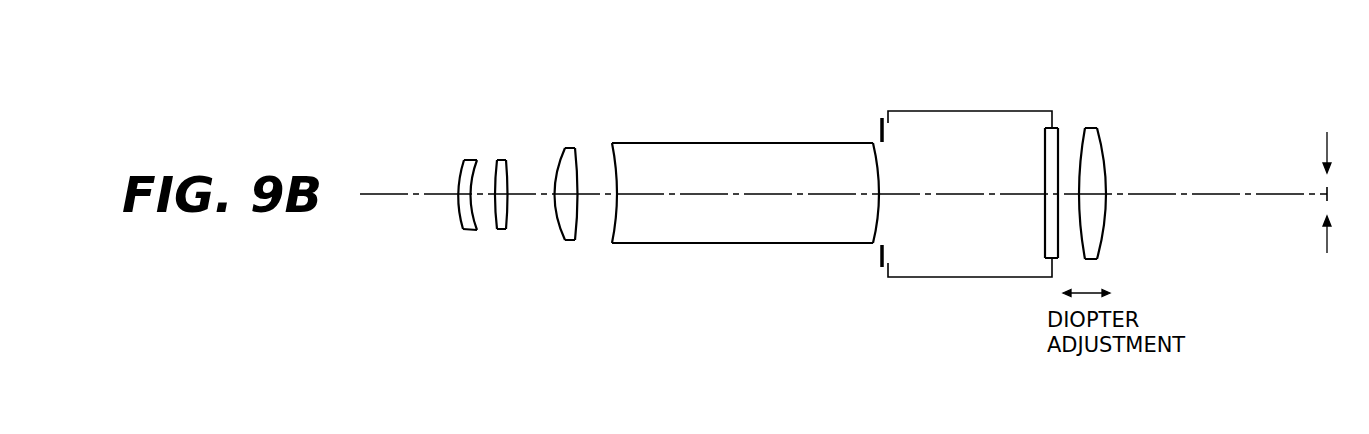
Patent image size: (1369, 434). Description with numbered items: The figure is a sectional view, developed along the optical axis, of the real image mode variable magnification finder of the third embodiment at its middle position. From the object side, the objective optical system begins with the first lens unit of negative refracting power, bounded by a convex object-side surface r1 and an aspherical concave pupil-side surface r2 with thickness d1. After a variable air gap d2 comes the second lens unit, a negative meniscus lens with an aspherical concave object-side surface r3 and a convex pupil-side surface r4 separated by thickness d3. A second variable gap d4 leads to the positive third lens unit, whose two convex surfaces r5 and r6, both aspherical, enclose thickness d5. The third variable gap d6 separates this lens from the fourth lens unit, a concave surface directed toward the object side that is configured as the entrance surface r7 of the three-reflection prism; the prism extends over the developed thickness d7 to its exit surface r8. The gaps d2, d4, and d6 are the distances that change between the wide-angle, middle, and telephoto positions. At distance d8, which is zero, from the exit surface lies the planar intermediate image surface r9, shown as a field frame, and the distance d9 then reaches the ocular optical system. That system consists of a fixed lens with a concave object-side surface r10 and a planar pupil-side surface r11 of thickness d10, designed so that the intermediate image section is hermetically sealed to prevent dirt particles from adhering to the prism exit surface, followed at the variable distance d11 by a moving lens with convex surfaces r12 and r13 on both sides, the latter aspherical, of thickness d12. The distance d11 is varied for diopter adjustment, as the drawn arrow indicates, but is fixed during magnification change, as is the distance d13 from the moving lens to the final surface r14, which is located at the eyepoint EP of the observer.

The object-side surface of the first lens unit r1 is at (460, 170).
The pupil-side surface of the first lens unit r2 is at (481, 163).
The object-side surface of the second lens unit r3 is at (496, 162).
The pupil-side surface of the second lens unit r4 is at (509, 176).
The object-side surface of the third lens unit r5 is at (553, 176).
The pupil-side surface of the third lens unit r6 is at (578, 160).
The entrance surface of the prism r7 is at (609, 150).
The exit surface of the prism r8 is at (878, 144).
The intermediate image surface r9 is at (881, 143).
The object-side surface of the fixed lens r10 is at (1047, 166).
The pupil-side surface of the fixed lens r11 is at (1059, 130).
The object-side surface of the moving lens r12 is at (1082, 126).
The pupil-side surface of the moving lens r13 is at (1106, 160).
The eyepoint surface r14 is at (1326, 157).
The thickness of the first lens unit d1 is at (465, 232).
The distance between the first and second lens units d2 is at (486, 197).
The thickness of the second lens unit d3 is at (500, 231).
The distance between the second and third lens units d4 is at (528, 196).
The thickness of the third lens unit d5 is at (567, 241).
The distance between the third lens unit and the prism d6 is at (590, 196).
The thickness of the prism d7 is at (718, 196).
The distance between the prism exit surface and the intermediate image surface d8 is at (882, 195).
The distance between the intermediate image surface and the fixed lens d9 is at (967, 195).
The thickness of the fixed lens d10 is at (1051, 196).
The distance between the fixed lens and the moving lens d11 is at (1067, 197).
The thickness of the moving lens d12 is at (1097, 194).
The distance between the moving lens and the eyepoint d13 is at (1207, 195).
The eyepoint EP is at (1327, 210).